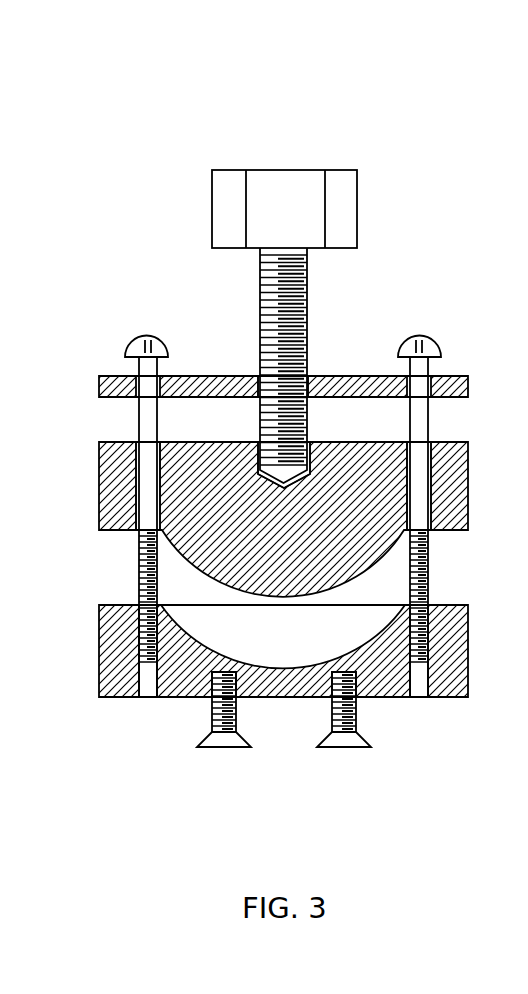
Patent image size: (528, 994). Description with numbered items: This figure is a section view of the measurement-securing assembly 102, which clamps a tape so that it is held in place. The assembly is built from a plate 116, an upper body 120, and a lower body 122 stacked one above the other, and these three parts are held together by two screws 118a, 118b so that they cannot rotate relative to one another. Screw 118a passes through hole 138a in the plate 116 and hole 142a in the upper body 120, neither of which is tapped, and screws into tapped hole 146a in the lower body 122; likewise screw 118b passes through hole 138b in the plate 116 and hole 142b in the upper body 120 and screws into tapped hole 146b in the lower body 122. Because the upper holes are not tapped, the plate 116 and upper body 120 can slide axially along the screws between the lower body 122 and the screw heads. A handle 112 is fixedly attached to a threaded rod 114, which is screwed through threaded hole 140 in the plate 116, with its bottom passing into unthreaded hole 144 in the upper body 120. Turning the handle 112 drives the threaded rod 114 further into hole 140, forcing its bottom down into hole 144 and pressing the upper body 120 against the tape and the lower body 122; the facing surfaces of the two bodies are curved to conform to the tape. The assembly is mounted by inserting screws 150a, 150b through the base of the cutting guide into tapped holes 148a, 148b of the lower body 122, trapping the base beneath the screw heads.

The measurement-securing assembly 102 is at (290, 100).
The handle 112 is at (212, 200).
The threaded rod 114 is at (260, 310).
The plate 116 is at (99, 385).
The screw 118a is at (126, 491).
The screw 118b is at (427, 491).
The upper body 120 is at (99, 483).
The lower body 122 is at (99, 645).
The hole 138a is at (137, 372).
The hole 138b is at (432, 372).
The hole 140 is at (258, 376).
The hole 142a is at (137, 446).
The hole 142b is at (431, 446).
The hole 144 is at (258, 442).
The hole 146a is at (139, 605).
The hole 146b is at (430, 605).
The hole 148a is at (200, 729).
The hole 148b is at (361, 729).
The screw 150a is at (222, 748).
The screw 150b is at (346, 748).